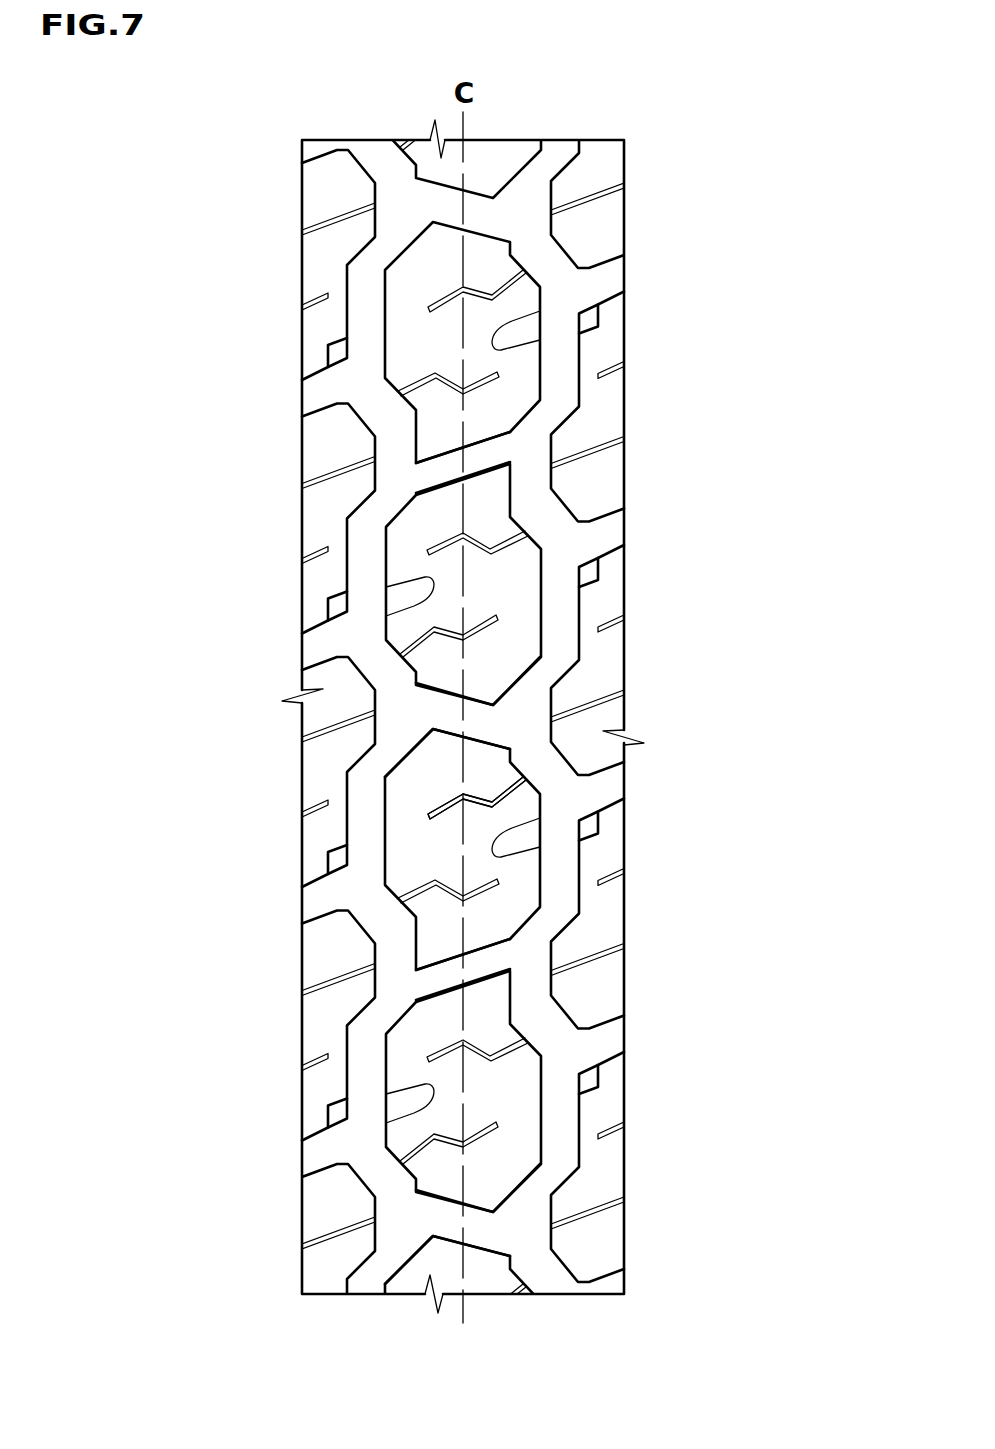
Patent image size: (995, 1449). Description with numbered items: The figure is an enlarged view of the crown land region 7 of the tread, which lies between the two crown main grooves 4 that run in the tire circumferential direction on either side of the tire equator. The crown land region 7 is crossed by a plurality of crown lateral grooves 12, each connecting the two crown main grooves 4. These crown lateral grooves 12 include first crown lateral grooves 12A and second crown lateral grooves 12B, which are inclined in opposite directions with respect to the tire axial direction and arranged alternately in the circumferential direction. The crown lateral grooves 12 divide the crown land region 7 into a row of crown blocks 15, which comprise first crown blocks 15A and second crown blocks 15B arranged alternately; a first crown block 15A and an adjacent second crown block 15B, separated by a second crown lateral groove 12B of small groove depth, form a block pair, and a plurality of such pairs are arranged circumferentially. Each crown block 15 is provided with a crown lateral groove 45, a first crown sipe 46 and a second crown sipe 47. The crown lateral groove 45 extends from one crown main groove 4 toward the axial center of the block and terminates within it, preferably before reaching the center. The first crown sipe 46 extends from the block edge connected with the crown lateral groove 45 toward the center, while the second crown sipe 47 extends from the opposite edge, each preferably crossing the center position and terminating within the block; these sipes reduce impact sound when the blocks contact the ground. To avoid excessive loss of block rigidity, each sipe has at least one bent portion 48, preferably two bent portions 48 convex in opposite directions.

The crown main groove 4 is at (383, 170).
The crown land region 7 is at (579, 724).
The crown lateral groove 12 is at (341, 836).
The first crown lateral groove 12A is at (448, 716).
The second crown lateral groove 12B is at (450, 472).
The crown block 15 is at (478, 320).
The first crown block 15A is at (475, 1093).
The second crown block 15B is at (493, 826).
The crown lateral groove 45 is at (520, 334).
The first crown sipe 46 is at (438, 298).
The second crown sipe 47 is at (410, 382).
The bent portion 48 is at (463, 800).